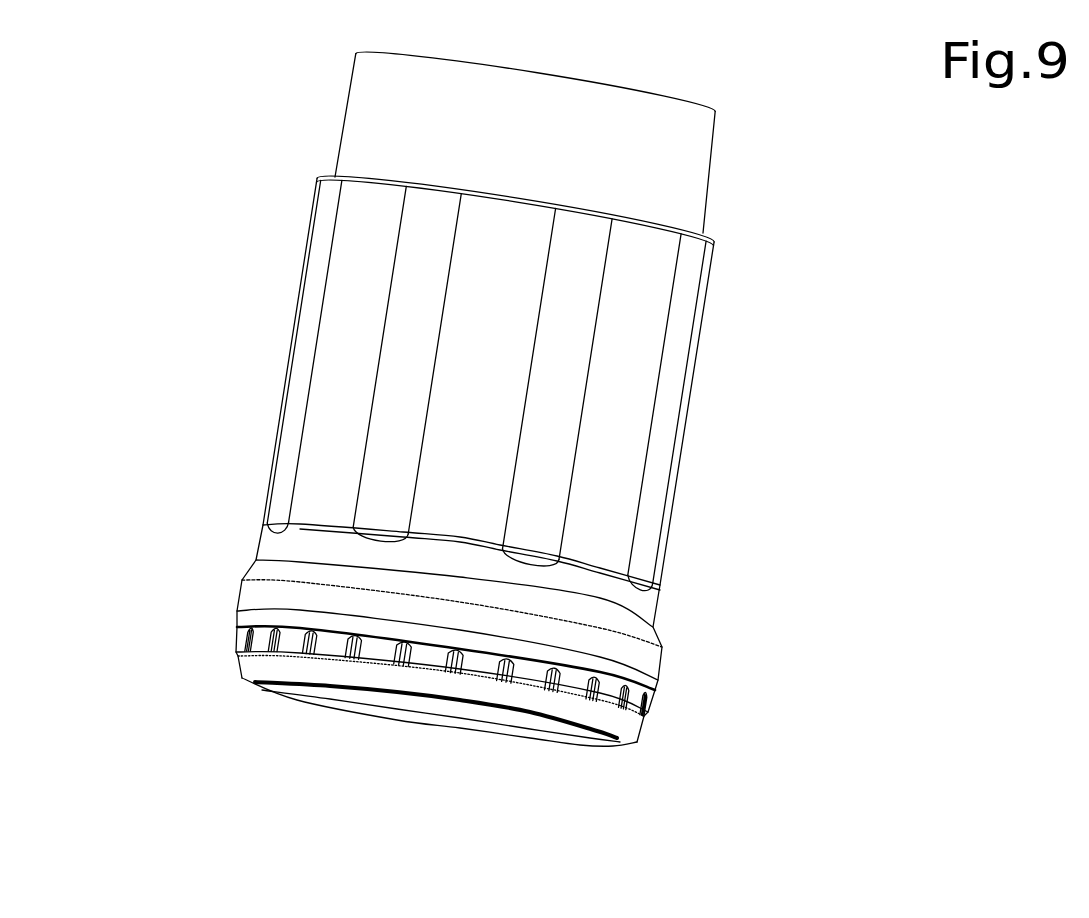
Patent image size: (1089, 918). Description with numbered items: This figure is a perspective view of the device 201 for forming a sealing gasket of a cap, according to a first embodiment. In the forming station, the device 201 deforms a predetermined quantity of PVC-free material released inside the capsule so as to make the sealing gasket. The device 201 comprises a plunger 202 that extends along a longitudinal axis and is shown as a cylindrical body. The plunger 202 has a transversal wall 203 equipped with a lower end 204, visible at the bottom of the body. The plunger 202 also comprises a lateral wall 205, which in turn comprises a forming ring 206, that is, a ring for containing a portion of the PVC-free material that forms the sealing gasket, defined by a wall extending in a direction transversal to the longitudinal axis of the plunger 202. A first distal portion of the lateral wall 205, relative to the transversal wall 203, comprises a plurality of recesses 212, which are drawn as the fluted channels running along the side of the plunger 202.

The device for forming a sealing gasket 201 is at (762, 317).
The plunger 202 is at (660, 606).
The transversal wall 203 is at (628, 751).
The lower end 204 is at (596, 748).
The lateral wall 205 is at (653, 723).
The forming ring 206 is at (661, 682).
The recesses 212 is at (352, 665).